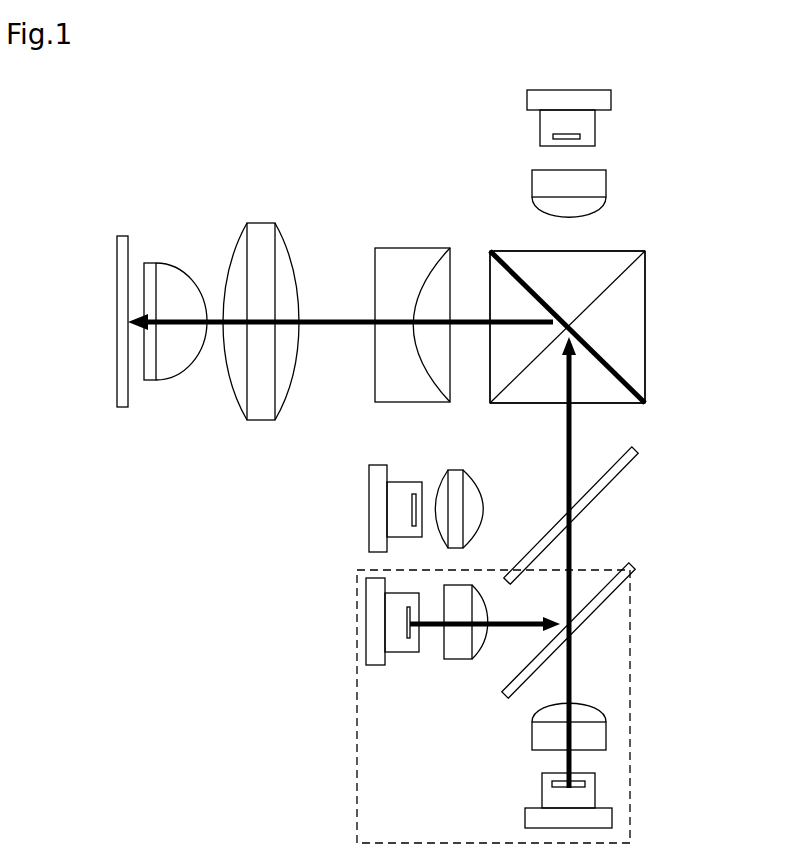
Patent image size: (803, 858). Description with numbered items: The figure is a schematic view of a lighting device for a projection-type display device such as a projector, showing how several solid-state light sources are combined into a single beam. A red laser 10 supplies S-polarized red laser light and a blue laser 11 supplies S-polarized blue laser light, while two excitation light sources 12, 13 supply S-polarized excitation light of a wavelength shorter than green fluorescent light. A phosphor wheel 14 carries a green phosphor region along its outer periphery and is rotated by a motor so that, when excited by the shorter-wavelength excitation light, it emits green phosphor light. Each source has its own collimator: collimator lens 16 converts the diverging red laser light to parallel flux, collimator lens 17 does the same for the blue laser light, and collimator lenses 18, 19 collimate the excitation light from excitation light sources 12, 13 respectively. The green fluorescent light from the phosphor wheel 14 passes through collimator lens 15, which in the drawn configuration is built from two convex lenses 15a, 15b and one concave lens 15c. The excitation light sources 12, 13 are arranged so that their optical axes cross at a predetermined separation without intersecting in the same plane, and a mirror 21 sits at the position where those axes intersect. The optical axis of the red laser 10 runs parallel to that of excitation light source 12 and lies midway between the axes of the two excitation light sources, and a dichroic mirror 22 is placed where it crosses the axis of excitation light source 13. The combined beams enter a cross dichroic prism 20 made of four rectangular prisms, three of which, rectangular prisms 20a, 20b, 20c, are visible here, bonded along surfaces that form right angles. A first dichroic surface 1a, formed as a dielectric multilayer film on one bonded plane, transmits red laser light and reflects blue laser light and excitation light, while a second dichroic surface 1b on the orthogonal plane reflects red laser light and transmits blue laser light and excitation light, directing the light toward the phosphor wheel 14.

The first dichroic surface 1a is at (518, 273).
The second dichroic surface 1b is at (615, 282).
The red laser 10 is at (369, 490).
The blue laser 11 is at (612, 93).
The excitation light source 12 is at (373, 665).
The excitation light source 13 is at (525, 816).
The phosphor wheel 14 is at (122, 236).
The collimator lens 15 is at (150, 213).
The convex lens 15a is at (158, 381).
The convex lens 15b is at (258, 421).
The concave lens 15c is at (380, 403).
The collimator lens 16 is at (470, 476).
The collimator lens 17 is at (608, 173).
The collimator lens 18 is at (448, 660).
The collimator lens 19 is at (532, 740).
The cross dichroic prism 20 is at (645, 255).
The rectangular prism 20a is at (573, 256).
The rectangular prism 20b is at (490, 385).
The rectangular prism 20c is at (538, 400).
The mirror 21 is at (637, 566).
The dichroic mirror 22 is at (641, 450).